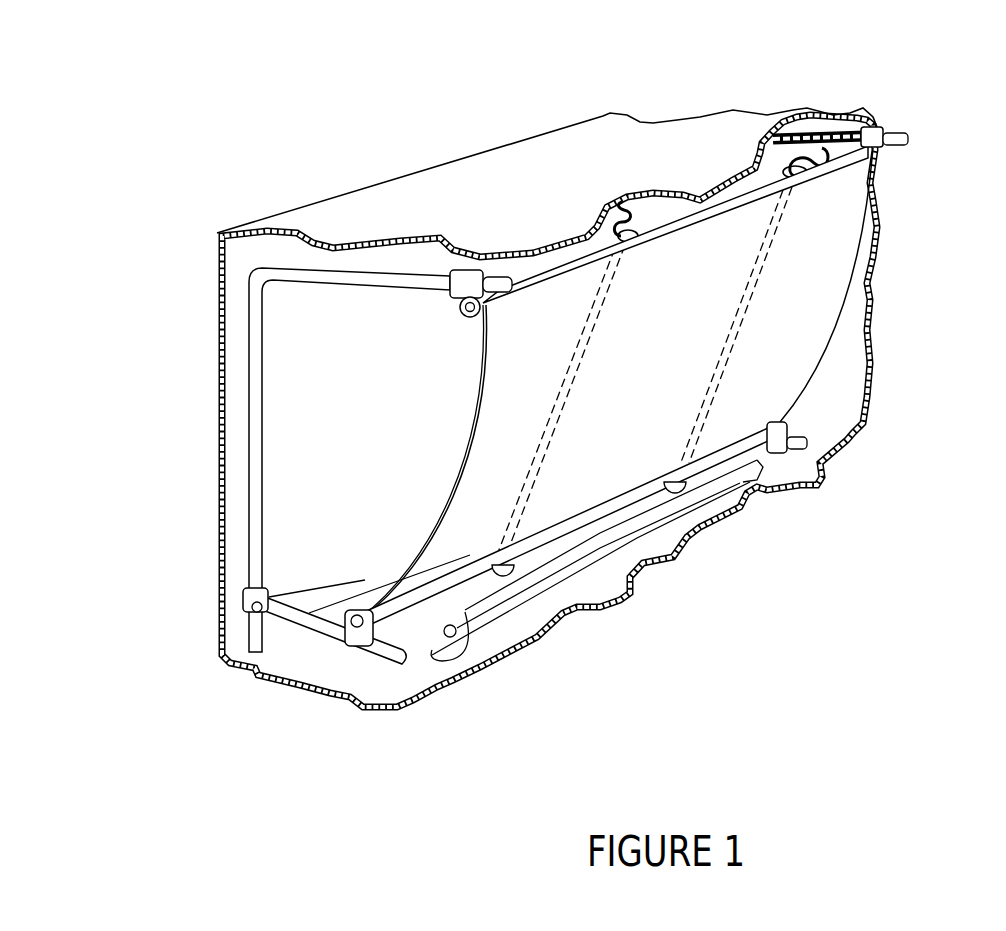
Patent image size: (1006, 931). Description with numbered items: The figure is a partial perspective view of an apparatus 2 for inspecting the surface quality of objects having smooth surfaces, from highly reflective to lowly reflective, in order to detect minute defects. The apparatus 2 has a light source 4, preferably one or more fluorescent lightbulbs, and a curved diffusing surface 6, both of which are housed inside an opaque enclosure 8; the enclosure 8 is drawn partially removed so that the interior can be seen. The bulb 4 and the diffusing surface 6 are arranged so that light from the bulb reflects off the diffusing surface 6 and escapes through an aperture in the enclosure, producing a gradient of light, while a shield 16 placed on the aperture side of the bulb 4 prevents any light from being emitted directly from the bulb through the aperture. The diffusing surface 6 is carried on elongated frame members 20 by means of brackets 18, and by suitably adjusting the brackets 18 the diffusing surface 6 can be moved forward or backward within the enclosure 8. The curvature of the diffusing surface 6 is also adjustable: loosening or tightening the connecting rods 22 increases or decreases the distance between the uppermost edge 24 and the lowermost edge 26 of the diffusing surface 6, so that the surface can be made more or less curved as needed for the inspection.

The apparatus 2 is at (222, 109).
The light source 4 is at (450, 637).
The diffusing surface 6 is at (722, 427).
The opaque enclosure 8 is at (218, 527).
The shield 16 is at (633, 533).
The brackets 18 is at (472, 270).
The elongated frame members 20 is at (247, 348).
The connecting rods 22 is at (600, 317).
The uppermost edge 24 is at (833, 167).
The lowermost edge 26 is at (549, 542).